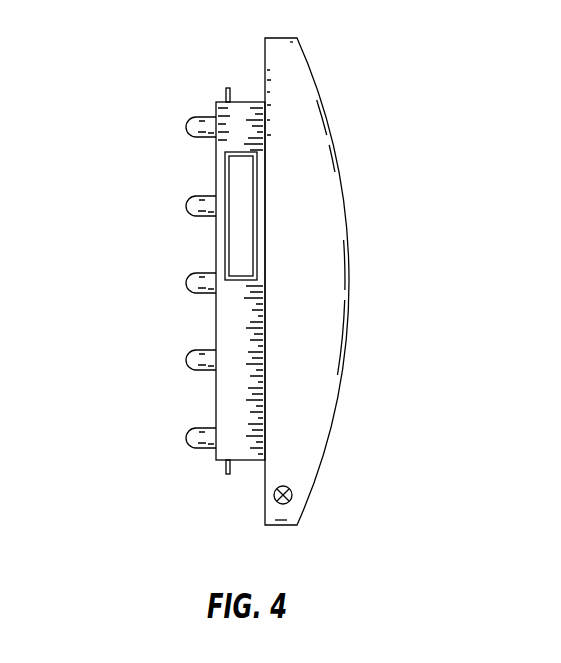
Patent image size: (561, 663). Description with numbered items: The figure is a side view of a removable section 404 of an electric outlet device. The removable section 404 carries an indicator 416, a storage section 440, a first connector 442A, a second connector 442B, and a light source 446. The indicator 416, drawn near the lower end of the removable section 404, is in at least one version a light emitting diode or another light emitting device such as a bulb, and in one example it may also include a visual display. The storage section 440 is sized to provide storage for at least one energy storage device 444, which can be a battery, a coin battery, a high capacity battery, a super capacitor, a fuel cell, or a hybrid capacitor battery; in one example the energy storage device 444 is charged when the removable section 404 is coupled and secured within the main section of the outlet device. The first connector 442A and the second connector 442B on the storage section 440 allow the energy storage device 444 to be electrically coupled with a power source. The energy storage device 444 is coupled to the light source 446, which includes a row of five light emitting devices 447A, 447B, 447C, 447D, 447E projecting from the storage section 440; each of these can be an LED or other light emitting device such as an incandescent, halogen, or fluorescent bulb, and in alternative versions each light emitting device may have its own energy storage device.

The removable section 404 is at (386, 178).
The indicator 416 is at (292, 496).
The storage section 440 is at (256, 100).
The first connector 442A is at (225, 97).
The second connector 442B is at (222, 466).
The energy storage device 444 is at (226, 192).
The light source 446 is at (172, 103).
The light emitting device 447A is at (186, 130).
The light emitting device 447B is at (186, 208).
The light emitting device 447C is at (186, 285).
The light emitting device 447D is at (186, 362).
The light emitting device 447E is at (186, 440).